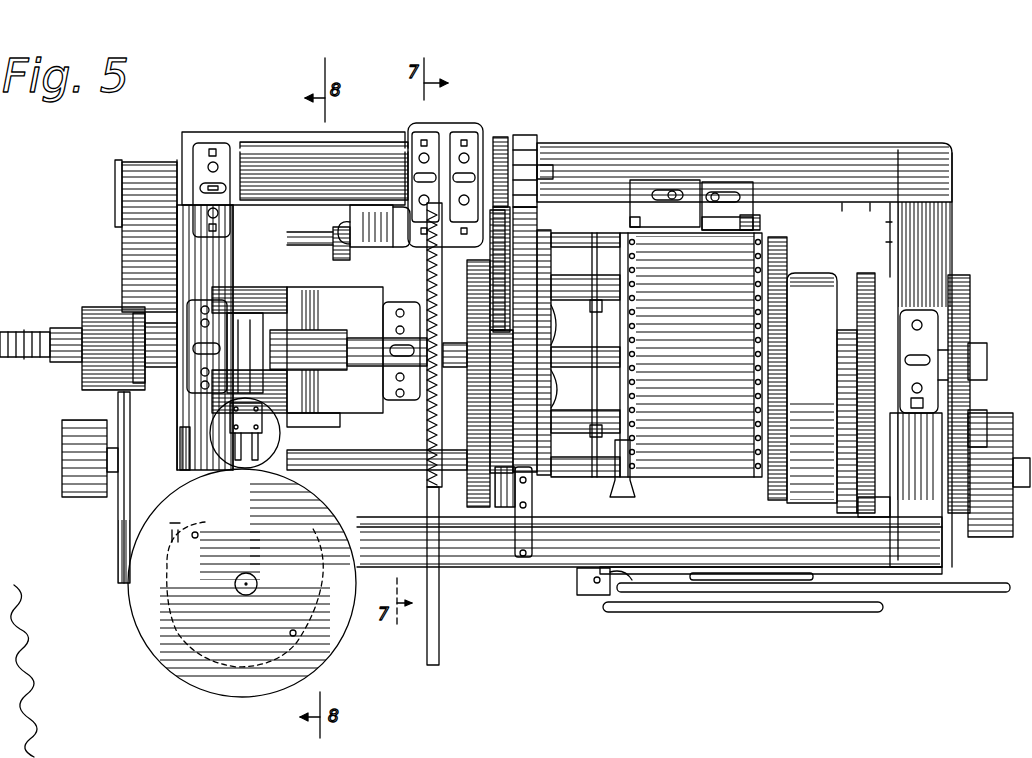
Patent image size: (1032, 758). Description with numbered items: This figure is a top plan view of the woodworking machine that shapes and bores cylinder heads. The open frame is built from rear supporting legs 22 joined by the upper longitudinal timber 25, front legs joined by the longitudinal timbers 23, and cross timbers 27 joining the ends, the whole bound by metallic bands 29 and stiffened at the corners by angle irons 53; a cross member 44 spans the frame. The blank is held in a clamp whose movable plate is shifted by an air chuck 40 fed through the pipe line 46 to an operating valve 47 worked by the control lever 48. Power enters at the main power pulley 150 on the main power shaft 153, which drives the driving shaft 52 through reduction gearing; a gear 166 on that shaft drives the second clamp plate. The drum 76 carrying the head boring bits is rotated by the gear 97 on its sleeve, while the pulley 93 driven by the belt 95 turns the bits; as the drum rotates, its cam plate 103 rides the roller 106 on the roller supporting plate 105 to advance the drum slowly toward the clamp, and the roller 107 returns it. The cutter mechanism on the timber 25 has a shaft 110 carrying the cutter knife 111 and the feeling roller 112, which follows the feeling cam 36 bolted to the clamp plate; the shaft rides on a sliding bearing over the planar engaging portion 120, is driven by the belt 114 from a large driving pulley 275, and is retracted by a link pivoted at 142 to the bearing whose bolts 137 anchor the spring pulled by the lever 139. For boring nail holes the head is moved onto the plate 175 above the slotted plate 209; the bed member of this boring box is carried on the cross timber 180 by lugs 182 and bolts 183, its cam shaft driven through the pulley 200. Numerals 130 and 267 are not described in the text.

The upper longitudinal timber 25 is at (946, 177).
The cross timber 27 is at (210, 272).
The belt 114 is at (145, 258).
The bearing bracket 130 is at (218, 150).
The shaft 110 is at (285, 180).
The engaging portion 120 is at (455, 143).
The feeling roller 112 is at (495, 148).
The cutter knife 111 is at (540, 150).
The roller 106 is at (655, 180).
The roller supporting plate 105 is at (693, 170).
The roller 107 is at (760, 224).
The drum 76 is at (690, 300).
The pulley 93 is at (785, 275).
The belt 95 is at (805, 353).
The gear 97 is at (865, 283).
The gear 267 is at (960, 305).
The main power pulley 150 is at (997, 447).
The gear 166 is at (975, 537).
The driving shaft 52 is at (830, 510).
The angle iron 53 is at (870, 510).
The longitudinal timber 23 is at (485, 548).
The metallic band 29 is at (930, 570).
The pipe line 46 is at (975, 590).
The control lever 48 is at (680, 608).
The operating valve 47 is at (585, 598).
The air chuck 40 is at (88, 310).
The main power shaft 153 is at (118, 457).
The driving pulley 275 is at (118, 529).
The plate 175 is at (233, 695).
The plate 209 is at (185, 675).
The bolt 183 is at (302, 299).
The lug 182 is at (299, 384).
The cross member 44 is at (378, 337).
The rear supporting leg 22 is at (400, 440).
The bolt 137 is at (345, 225).
The pivot 142 is at (388, 238).
The pulley 200 is at (292, 260).
The lever 139 is at (432, 633).
The feeling cam 36 is at (490, 258).
The cross timber 180 is at (430, 500).
The cam plate 103 is at (640, 490).